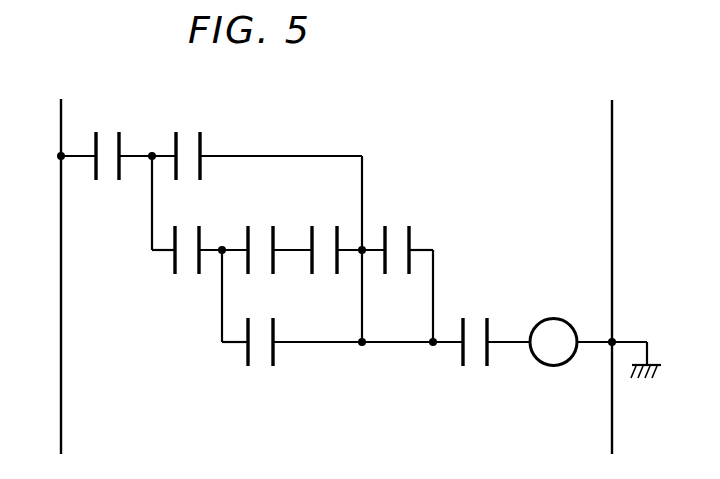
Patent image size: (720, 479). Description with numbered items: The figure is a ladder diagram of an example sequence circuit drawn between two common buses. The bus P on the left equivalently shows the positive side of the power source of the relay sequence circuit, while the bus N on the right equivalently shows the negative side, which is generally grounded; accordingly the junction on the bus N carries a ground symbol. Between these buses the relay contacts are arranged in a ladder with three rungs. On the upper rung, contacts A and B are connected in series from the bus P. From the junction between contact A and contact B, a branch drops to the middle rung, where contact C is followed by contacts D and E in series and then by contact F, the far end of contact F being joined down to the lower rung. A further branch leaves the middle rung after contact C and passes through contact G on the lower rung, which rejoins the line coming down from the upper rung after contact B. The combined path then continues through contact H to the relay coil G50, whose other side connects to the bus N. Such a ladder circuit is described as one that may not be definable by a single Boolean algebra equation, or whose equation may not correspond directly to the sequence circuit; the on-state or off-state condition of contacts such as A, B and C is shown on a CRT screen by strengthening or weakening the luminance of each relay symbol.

The bus P is at (61, 119).
The bus N is at (614, 120).
The contact A is at (107, 142).
The contact B is at (188, 142).
The contact C is at (187, 236).
The contact D is at (260, 236).
The contact E is at (324, 236).
The contact F is at (397, 236).
The contact G is at (260, 329).
The contact H is at (475, 330).
The relay coil G50 is at (553, 329).